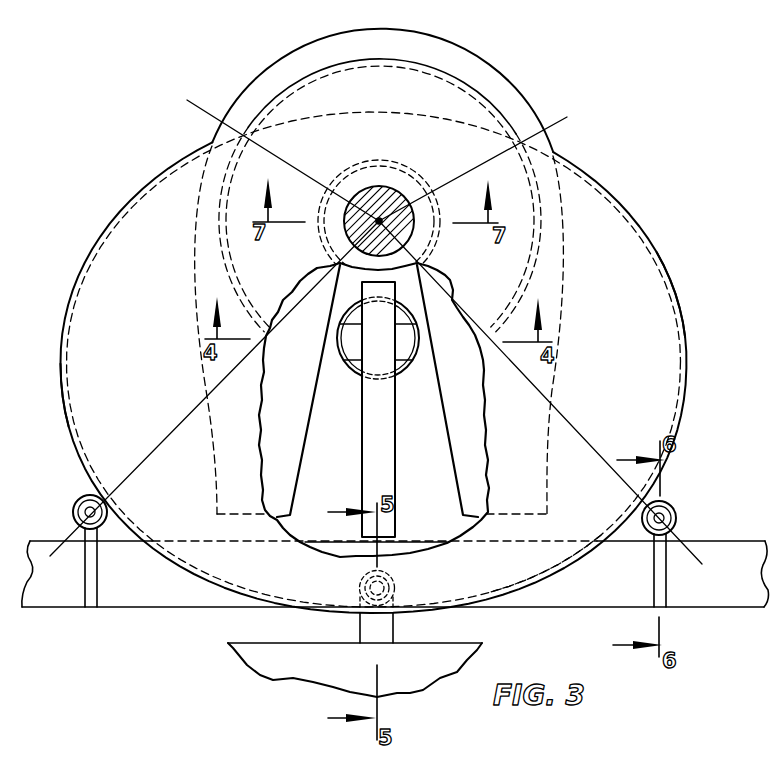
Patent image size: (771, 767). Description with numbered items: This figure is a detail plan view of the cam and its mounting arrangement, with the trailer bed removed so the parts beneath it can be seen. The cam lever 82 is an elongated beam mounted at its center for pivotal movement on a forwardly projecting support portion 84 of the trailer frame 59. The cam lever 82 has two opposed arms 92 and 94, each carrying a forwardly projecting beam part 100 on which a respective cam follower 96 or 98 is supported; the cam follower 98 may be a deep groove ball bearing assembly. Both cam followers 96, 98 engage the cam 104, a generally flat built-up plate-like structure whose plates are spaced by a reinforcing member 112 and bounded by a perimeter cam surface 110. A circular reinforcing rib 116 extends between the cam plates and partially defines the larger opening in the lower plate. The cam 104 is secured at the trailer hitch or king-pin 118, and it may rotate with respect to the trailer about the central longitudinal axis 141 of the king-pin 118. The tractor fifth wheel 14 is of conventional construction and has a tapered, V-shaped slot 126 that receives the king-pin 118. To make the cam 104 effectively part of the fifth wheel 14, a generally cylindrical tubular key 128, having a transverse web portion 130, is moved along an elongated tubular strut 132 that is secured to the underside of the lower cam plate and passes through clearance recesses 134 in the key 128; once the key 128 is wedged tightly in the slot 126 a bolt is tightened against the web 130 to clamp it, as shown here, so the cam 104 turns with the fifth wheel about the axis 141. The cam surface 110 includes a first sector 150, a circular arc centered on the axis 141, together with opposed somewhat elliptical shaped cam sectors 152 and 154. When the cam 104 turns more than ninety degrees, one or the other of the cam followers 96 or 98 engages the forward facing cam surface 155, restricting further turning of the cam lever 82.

The tractor fifth wheel 14 is at (481, 60).
The forward facing cam surface 155 is at (486, 105).
The cam 104 is at (617, 190).
The cam sector 152 is at (677, 294).
The perimeter cam surface 110 is at (677, 313).
The cam sector 154 is at (65, 402).
The first sector 150 is at (557, 575).
The king-pin 118 is at (373, 186).
The central longitudinal axis 141 is at (376, 218).
The reinforcing member 112 is at (400, 196).
The circular reinforcing rib 116 is at (439, 268).
The clearance recesses 134 is at (343, 317).
The transverse web portion 130 is at (414, 344).
The key 128 is at (408, 380).
The slot 126 is at (308, 430).
The tubular strut 132 is at (396, 438).
The cam follower 96 is at (74, 506).
The cam follower 98 is at (676, 515).
The beam parts 100 is at (97, 572).
The arm 92 is at (71, 608).
The arm 94 is at (715, 609).
The cam lever 82 is at (165, 614).
The support portion 84 is at (394, 631).
The trailer frame 59 is at (424, 694).